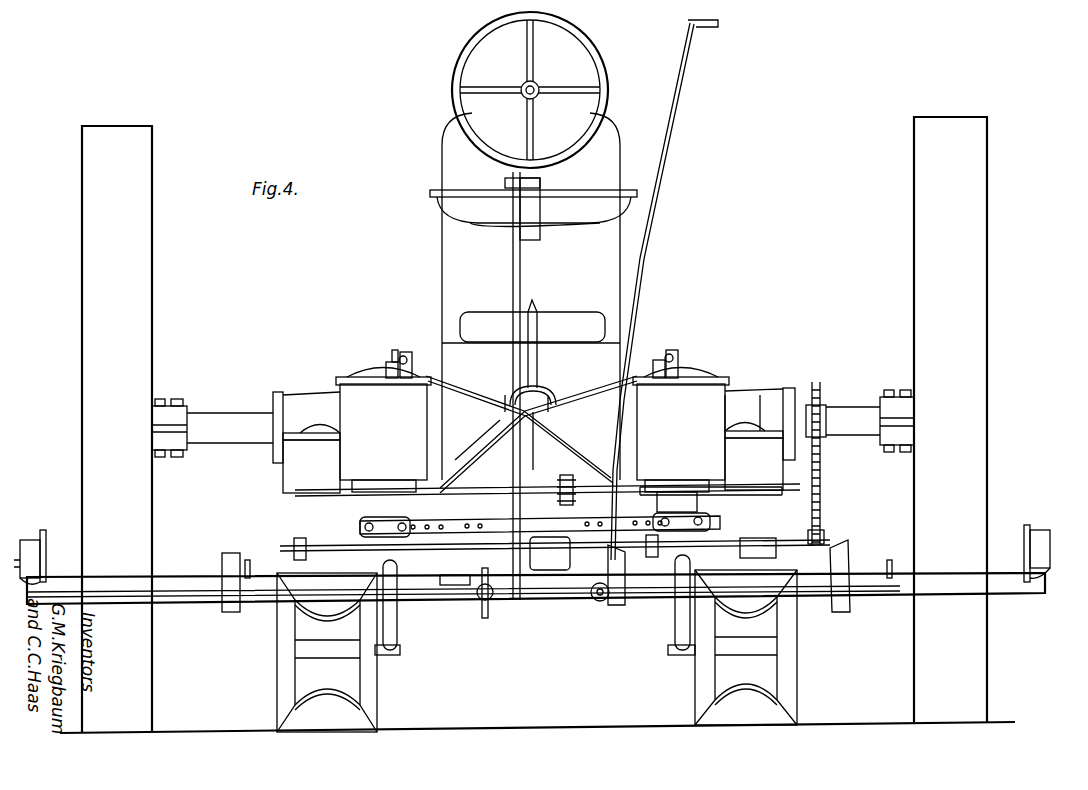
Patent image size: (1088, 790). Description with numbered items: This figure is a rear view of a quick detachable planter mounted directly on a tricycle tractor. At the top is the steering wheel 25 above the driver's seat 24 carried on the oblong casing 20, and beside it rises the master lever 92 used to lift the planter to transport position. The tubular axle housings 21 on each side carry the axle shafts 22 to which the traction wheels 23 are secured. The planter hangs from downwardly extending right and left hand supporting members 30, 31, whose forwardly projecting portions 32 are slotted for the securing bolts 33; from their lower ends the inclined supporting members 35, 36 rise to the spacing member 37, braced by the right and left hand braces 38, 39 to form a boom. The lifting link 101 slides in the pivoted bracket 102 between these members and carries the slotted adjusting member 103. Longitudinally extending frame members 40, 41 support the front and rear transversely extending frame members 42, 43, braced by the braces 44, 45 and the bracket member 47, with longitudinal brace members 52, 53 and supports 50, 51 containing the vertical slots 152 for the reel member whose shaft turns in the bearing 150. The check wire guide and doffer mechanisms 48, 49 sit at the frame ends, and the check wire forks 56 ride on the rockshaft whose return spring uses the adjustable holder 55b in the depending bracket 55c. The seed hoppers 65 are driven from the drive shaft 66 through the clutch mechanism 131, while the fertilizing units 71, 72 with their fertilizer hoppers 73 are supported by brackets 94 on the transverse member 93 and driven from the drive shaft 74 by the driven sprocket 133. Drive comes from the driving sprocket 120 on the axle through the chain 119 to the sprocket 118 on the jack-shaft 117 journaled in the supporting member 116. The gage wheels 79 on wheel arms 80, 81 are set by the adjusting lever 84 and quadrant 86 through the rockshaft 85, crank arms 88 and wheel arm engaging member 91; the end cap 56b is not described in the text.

The oblong casing 20 is at (605, 345).
The tubular axle housings 21 is at (305, 402).
The axle shafts 22 is at (228, 425).
The traction wheels 23 is at (152, 272).
The driver's seat 24 is at (442, 208).
The steering wheel 25 is at (590, 50).
The right hand supporting member 30 is at (676, 356).
The left hand supporting member 31 is at (392, 360).
The forwardly projecting portions 32 is at (412, 356).
The securing bolts 33 is at (400, 348).
The right hand supporting member 35 is at (565, 445).
The left hand supporting member 36 is at (466, 449).
The spacing member 37 is at (505, 413).
The right hand brace 38 is at (614, 378).
The left hand brace 39 is at (492, 400).
The longitudinally extending frame member 40 is at (610, 604).
The longitudinally extending frame member 41 is at (445, 578).
The front transversely extending frame member 42 is at (168, 578).
The rear transversely extending frame member 43 is at (192, 596).
The forwardly extending brace 44 is at (835, 560).
The forwardly extending brace 45 is at (255, 560).
The downwardly extending bracket member 47 is at (230, 614).
The right hand check wire guide and doffer mechanism 48 is at (1026, 535).
The left hand check wire guide and doffer mechanism 49 is at (40, 548).
The right hand support 50 is at (606, 601).
The left hand support 51 is at (482, 600).
The right hand brace member 52 is at (890, 580).
The left hand brace member 53 is at (248, 558).
The adjustable holder 55b is at (487, 604).
The depending bracket 55c is at (498, 600).
The check wire forks 56 is at (498, 433).
The hook 56b is at (22, 545).
The seed hoppers 65 is at (533, 458).
The transversely extending drive shaft 66 is at (300, 538).
The fertilizing unit 71 is at (728, 365).
The fertilizing unit 72 is at (372, 370).
The fertilizer hoppers 73 is at (532, 430).
The transversely extending drive shaft 74 is at (735, 488).
The gage wheels 79 is at (370, 697).
The right hand wheel supporting arm 80 is at (688, 555).
The left hand wheel supporting arm 81 is at (388, 566).
The adjusting lever 84 is at (510, 264).
The transverse rockshaft 85 is at (553, 572).
The adjusting quadrant 86 is at (512, 505).
The crank arms 88 is at (397, 600).
The wheel arm engaging member 91 is at (348, 616).
The master lever 92 is at (668, 205).
The transverse extending frame member 93 is at (578, 495).
The supporting brackets 94 is at (365, 513).
The lifting link 101 is at (535, 437).
The pivoted bracket 102 is at (546, 388).
The adjusting member 103 is at (538, 354).
The jack-shaft supporting member 116 is at (823, 530).
The jack-shaft 117 is at (828, 550).
The sprocket 118 is at (824, 540).
The chain 119 is at (812, 390).
The driving sprocket 120 is at (828, 400).
The clutch mechanism 131 is at (525, 598).
The driven sprocket 133 is at (525, 483).
The bearing 150 is at (585, 598).
The vertical slot 152 is at (488, 602).